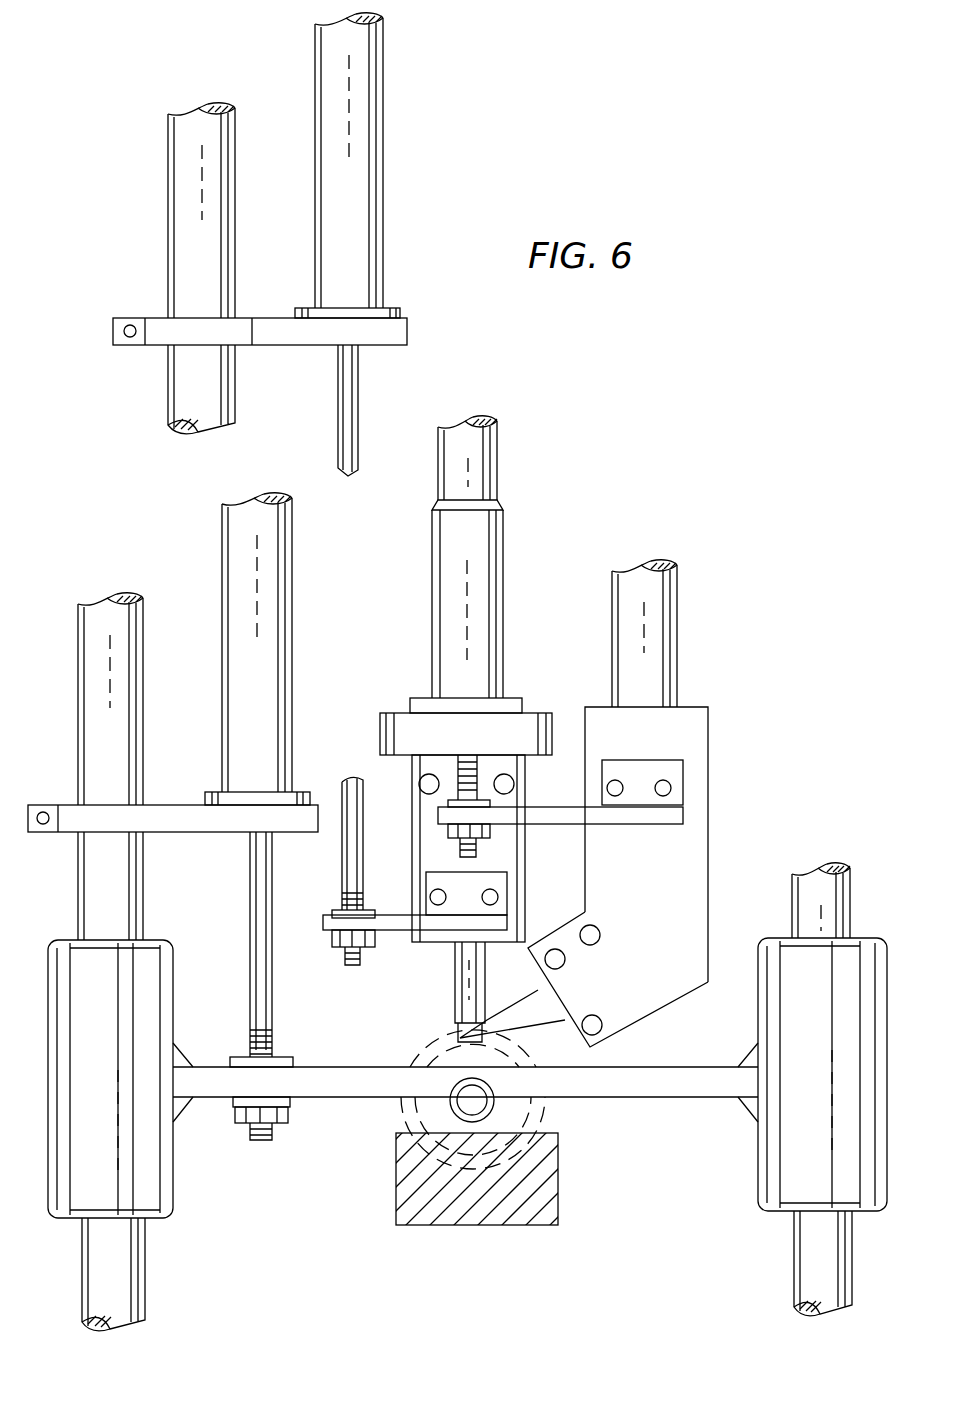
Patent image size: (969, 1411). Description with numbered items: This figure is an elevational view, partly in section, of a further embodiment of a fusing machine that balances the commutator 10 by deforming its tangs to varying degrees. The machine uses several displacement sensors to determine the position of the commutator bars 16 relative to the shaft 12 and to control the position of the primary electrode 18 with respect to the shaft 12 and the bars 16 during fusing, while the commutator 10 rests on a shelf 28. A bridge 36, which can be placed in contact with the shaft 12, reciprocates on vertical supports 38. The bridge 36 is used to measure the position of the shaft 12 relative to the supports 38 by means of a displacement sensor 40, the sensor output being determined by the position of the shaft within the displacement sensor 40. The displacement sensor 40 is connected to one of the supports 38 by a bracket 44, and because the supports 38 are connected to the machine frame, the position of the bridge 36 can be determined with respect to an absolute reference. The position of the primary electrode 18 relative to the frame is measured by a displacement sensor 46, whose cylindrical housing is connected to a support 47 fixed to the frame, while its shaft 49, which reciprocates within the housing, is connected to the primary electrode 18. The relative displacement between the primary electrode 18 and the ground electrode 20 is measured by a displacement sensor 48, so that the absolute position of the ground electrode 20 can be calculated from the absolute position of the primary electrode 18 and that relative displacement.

The commutator 10 is at (425, 1040).
The shaft 12 is at (494, 1108).
The commutator bar 16 is at (458, 1040).
The primary electrode 18 is at (455, 972).
The ground electrode 20 is at (528, 1000).
The shelf 28 is at (558, 1192).
The bridge 36 is at (700, 1098).
The vertical supports 38 is at (78, 631).
The displacement sensor 40 is at (222, 592).
The bracket 44 is at (172, 832).
The displacement sensor 46 is at (384, 185).
The support 47 is at (234, 236).
The displacement sensor 48 is at (503, 552).
The shaft 49 is at (358, 418).